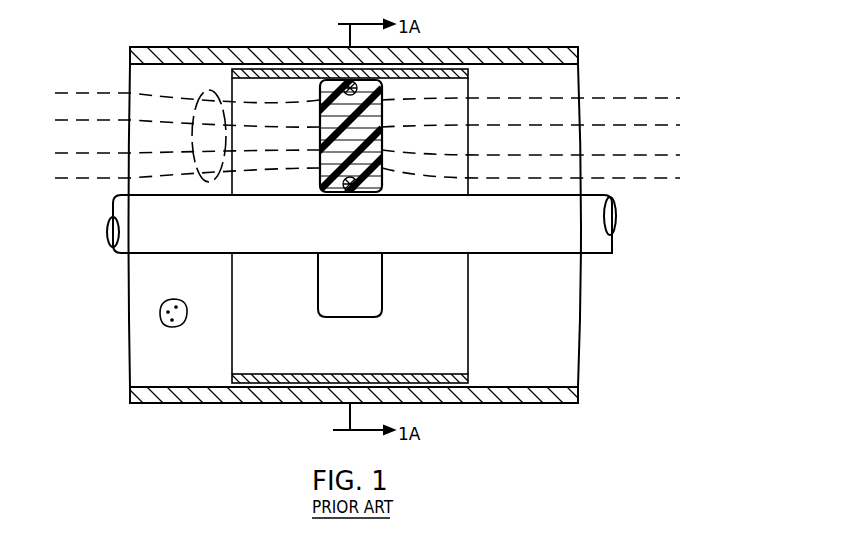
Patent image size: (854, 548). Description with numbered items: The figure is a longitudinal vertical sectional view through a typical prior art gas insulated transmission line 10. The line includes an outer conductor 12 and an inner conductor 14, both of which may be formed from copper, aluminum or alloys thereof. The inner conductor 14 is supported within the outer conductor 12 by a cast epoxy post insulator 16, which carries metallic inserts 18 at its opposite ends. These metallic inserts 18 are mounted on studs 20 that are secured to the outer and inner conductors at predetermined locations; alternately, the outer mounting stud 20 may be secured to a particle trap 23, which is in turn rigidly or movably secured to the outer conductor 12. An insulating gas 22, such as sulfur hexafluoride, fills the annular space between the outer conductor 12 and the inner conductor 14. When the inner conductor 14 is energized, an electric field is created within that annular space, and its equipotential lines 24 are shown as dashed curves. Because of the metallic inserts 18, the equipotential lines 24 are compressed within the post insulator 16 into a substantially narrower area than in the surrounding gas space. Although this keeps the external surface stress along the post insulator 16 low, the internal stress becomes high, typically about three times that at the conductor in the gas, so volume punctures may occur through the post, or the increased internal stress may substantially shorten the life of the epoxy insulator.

The gas insulated transmission line 10 is at (615, 65).
The outer conductor 12 is at (130, 50).
The inner conductor 14 is at (603, 250).
The cast epoxy post insulator 16 is at (382, 176).
The metallic inserts 18 is at (320, 98).
The studs 20 is at (382, 98).
The insulating gas 22 is at (184, 322).
The particle trap 23 is at (468, 75).
The equipotential lines 24 is at (206, 95).